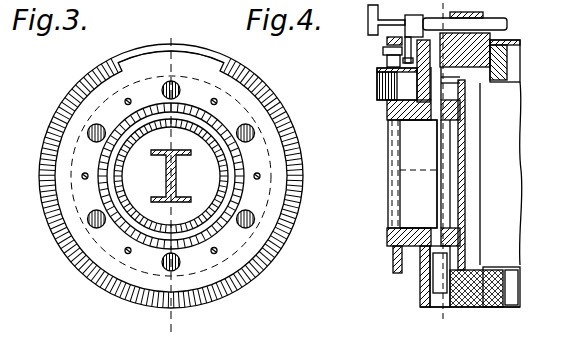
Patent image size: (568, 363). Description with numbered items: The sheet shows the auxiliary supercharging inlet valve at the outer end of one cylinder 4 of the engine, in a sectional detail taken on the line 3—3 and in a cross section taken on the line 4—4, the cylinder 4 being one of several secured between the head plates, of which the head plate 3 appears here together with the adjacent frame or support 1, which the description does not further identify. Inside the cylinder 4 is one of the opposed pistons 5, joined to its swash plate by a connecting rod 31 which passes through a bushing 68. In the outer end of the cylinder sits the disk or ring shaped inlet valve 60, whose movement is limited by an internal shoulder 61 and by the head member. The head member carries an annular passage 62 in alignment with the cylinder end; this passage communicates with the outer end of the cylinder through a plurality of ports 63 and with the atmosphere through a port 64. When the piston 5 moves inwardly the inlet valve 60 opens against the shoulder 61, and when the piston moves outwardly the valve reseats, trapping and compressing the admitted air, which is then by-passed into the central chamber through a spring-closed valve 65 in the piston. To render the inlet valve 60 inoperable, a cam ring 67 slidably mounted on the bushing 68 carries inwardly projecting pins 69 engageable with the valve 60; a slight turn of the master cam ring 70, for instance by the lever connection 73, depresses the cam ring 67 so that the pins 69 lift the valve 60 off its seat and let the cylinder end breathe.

In FIG. 4, the supporting frame 1 is at (453, 33).
In FIG. 4, the head plate 3 is at (468, 320).
In FIG. 3, the cylinder 4 is at (168, 178).
In FIG. 3, the piston 5 is at (214, 162).
In FIG. 3, the connecting rod 31 is at (166, 178).
In FIG. 4, the inlet valve 60 is at (466, 160).
In FIG. 4, the internal shoulder 61 is at (478, 80).
In FIG. 3, the annular passage 62 is at (243, 234).
In FIG. 4, the annular passage 62 is at (417, 281).
In FIG. 3, the ports 63 is at (156, 279).
In FIG. 4, the ports 63 is at (466, 260).
In FIG. 3, the port 64 is at (223, 58).
In FIG. 3, the valve 65 is at (86, 179).
In FIG. 4, the cam ring 67 is at (387, 104).
In FIG. 4, the bushing 68 is at (400, 191).
In FIG. 3, the pins 69 is at (259, 179).
In FIG. 4, the pins 69 is at (392, 120).
In FIG. 4, the master cam ring 70 is at (377, 85).
In FIG. 4, the lever connection 73 is at (385, 39).